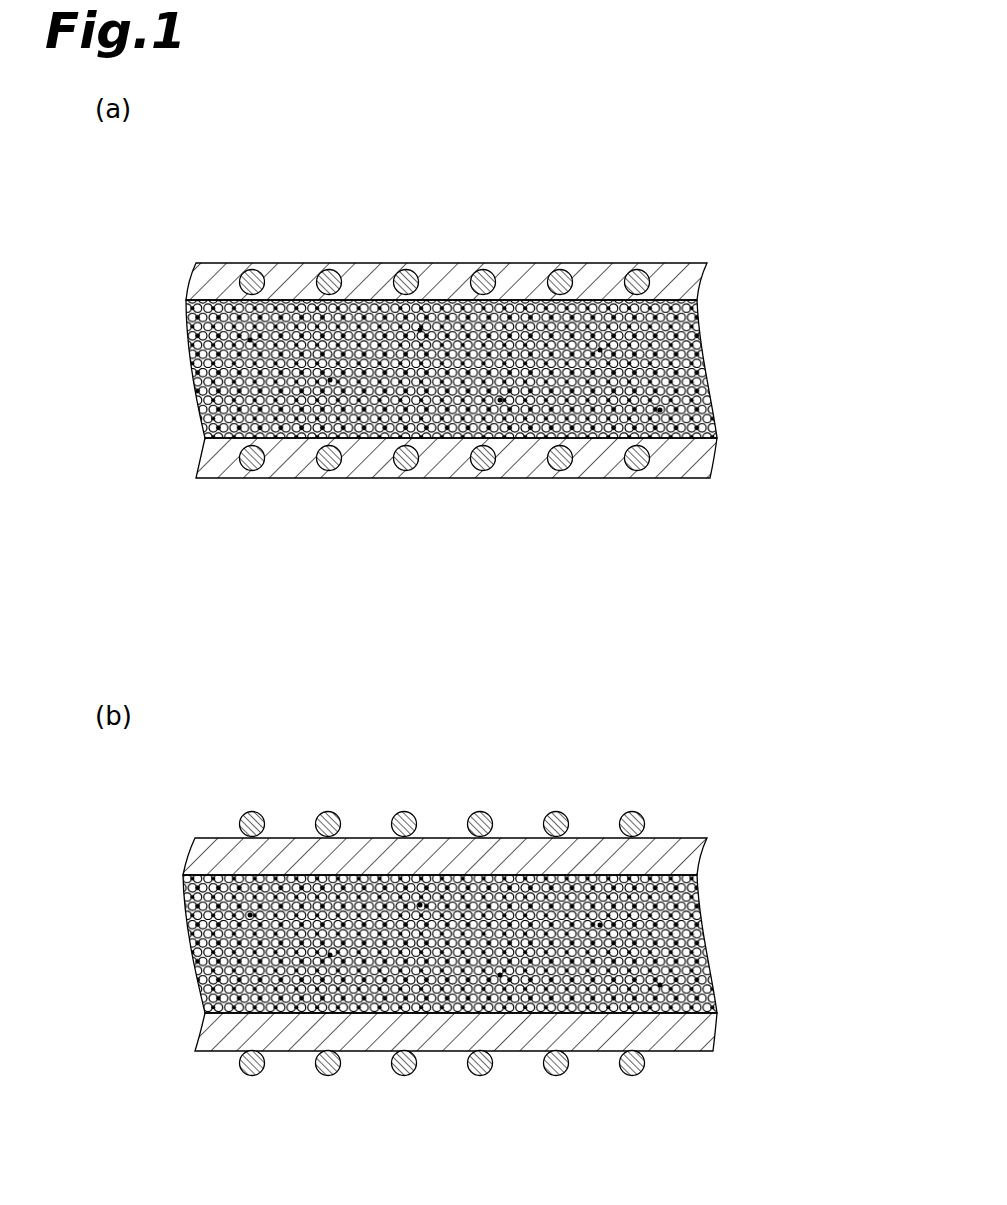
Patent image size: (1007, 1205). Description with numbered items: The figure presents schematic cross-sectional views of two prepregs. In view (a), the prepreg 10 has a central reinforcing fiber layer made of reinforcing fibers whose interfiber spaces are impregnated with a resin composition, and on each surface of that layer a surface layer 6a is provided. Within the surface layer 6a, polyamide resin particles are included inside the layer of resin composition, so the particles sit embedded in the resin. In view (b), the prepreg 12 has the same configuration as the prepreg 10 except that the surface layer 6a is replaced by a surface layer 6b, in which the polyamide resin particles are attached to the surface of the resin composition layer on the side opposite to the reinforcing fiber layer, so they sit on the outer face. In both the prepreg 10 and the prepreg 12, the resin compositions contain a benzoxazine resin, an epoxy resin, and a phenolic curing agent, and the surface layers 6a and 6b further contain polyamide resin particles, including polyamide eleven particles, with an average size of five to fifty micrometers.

The surface layer 6a is at (315, 218).
The surface layer 6b is at (620, 760).
The prepreg 10 is at (707, 213).
The prepreg 12 is at (710, 740).